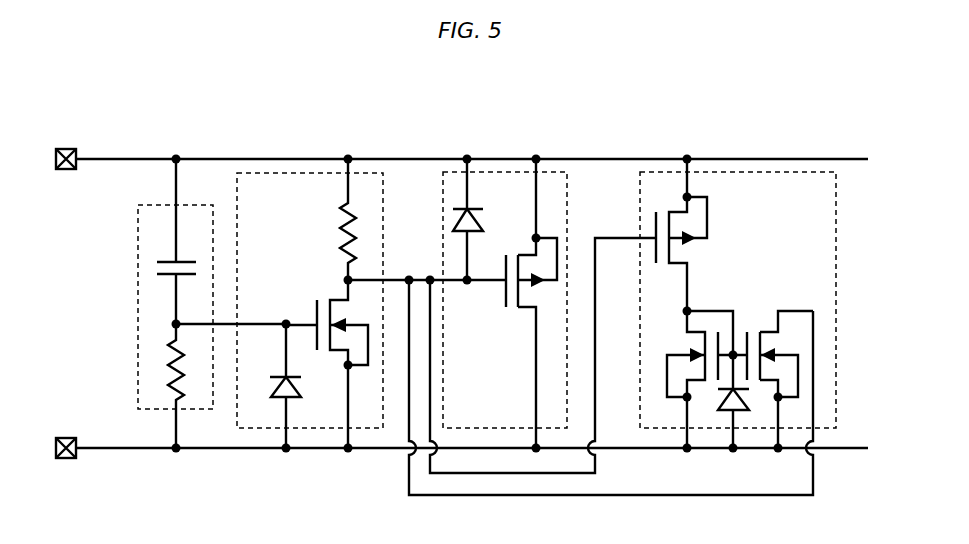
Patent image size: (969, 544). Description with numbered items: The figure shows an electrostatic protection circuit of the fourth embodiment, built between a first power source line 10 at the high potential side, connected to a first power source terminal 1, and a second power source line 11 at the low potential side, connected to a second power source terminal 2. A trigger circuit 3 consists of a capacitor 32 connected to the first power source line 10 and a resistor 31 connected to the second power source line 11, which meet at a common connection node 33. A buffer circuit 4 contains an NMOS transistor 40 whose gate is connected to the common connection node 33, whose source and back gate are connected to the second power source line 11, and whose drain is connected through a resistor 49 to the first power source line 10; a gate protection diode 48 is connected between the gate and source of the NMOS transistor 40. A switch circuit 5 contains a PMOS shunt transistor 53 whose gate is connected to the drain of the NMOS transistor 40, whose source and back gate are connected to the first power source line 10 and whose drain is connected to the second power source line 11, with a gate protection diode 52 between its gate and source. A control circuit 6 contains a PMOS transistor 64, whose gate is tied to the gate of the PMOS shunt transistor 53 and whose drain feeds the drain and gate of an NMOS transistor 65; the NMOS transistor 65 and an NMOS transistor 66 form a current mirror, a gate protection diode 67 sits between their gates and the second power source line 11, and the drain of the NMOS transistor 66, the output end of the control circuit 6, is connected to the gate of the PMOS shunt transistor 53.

The first power source terminal 1 is at (66, 148).
The second power source terminal 2 is at (66, 437).
The trigger circuit 3 is at (137, 230).
The buffer circuit 4 is at (367, 172).
The switch circuit 5 is at (500, 172).
The control circuit 6 is at (755, 172).
The first power source line 10 is at (415, 157).
The second power source line 11 is at (212, 452).
The resistor 31 is at (170, 355).
The capacitor 32 is at (155, 270).
The common connection node 33 is at (172, 325).
The NMOS transistor 40 is at (334, 362).
The gate protection diode 48 is at (277, 404).
The resistor 49 is at (344, 200).
The gate protection diode 52 is at (476, 206).
The PMOS shunt transistor 53 is at (548, 226).
The PMOS transistor 64 is at (700, 195).
The NMOS transistor 65 is at (697, 392).
The NMOS transistor 66 is at (791, 405).
The gate protection diode 67 is at (742, 418).